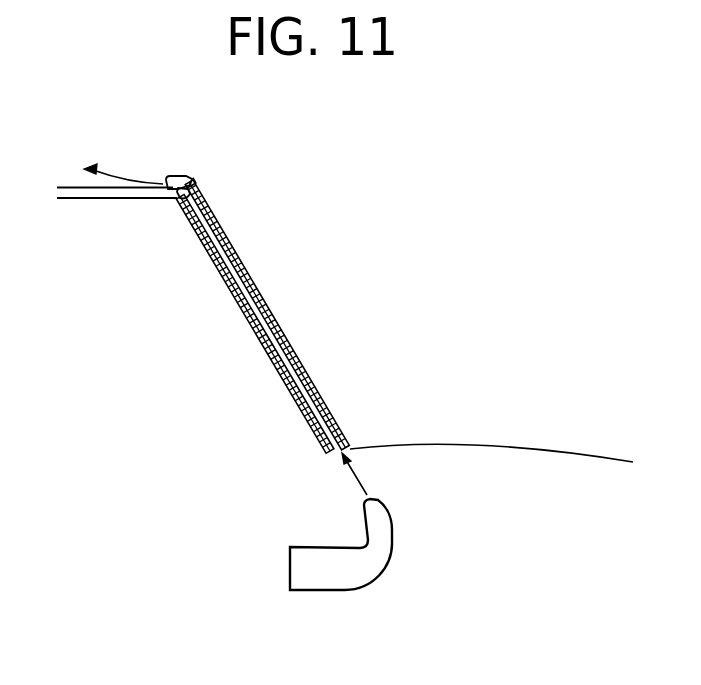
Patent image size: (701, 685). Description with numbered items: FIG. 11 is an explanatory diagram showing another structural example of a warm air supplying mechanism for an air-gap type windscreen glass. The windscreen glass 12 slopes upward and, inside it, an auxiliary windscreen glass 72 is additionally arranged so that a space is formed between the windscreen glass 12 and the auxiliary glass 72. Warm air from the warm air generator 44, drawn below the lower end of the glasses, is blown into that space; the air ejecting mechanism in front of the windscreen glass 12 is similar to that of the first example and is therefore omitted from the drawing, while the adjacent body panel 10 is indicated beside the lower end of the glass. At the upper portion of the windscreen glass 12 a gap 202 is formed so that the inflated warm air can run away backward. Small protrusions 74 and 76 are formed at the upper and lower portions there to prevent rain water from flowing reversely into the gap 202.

The vehicle body panel 10 is at (457, 443).
The windscreen glass 12 is at (297, 355).
The warm air generator 44 is at (300, 547).
The auxiliary windscreen glass 72 is at (293, 393).
The small protrusion 74 is at (163, 183).
The small protrusion 76 is at (177, 200).
The gap 202 is at (184, 181).